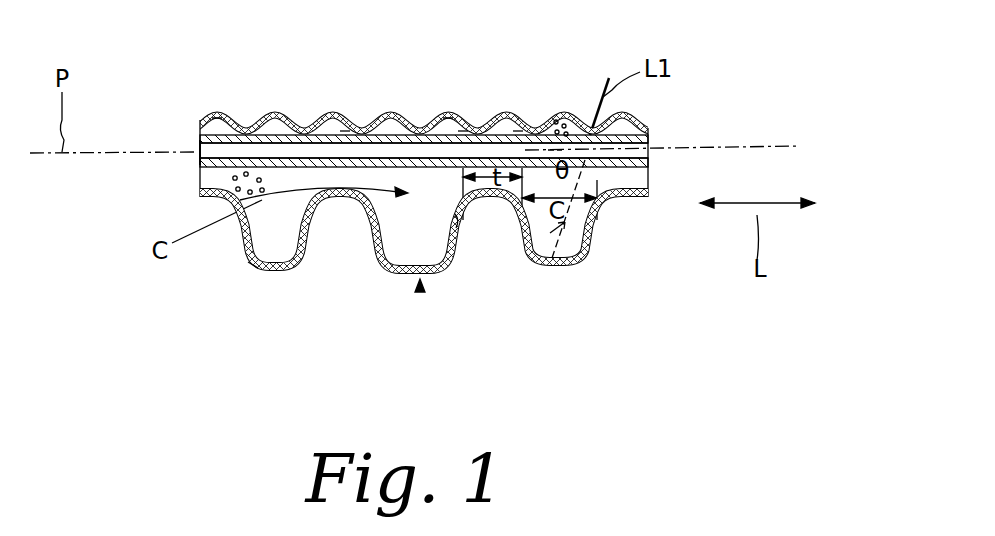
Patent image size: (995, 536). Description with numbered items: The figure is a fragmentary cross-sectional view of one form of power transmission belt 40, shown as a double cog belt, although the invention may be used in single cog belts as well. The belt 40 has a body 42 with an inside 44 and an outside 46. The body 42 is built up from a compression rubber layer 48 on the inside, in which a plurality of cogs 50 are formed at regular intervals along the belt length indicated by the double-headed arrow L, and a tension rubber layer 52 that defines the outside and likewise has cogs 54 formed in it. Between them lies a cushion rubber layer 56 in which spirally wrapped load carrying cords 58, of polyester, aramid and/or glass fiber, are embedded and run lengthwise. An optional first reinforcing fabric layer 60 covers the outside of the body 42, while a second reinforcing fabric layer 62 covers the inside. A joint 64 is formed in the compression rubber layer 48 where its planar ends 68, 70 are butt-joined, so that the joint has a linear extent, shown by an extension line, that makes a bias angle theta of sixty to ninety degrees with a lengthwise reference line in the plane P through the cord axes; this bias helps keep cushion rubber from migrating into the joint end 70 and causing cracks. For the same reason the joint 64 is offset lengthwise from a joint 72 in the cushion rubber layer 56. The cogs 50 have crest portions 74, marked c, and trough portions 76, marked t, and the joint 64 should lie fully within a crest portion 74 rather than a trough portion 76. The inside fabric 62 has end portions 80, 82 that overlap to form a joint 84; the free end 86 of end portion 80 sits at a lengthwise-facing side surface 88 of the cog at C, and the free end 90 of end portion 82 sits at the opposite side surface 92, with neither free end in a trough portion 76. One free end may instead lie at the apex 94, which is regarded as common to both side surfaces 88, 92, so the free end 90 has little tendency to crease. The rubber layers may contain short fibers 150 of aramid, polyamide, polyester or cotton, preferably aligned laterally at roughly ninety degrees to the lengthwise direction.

The power transmission belt 40 is at (649, 133).
The body 42 is at (649, 167).
The inside 44 is at (632, 192).
The outside 46 is at (288, 128).
The compression rubber layer 48 is at (257, 260).
The cogs 50 is at (302, 270).
The tension rubber layer 52 is at (345, 128).
The cogs 54 is at (275, 110).
The cushion rubber layer 56 is at (518, 128).
The load carrying cords 58 is at (200, 152).
The first reinforcing fabric layer 60 is at (393, 128).
The second reinforcing fabric layer 62 is at (520, 253).
The joint 64 is at (520, 273).
The end 68 is at (540, 217).
The end 70 is at (575, 240).
The joint 72 is at (367, 273).
The crest portion 74 is at (523, 263).
The trough portion 76 is at (483, 205).
The end portion 80 is at (383, 285).
The end portion 82 is at (447, 233).
The joint 84 is at (420, 290).
The free end 86 is at (348, 222).
The side surface 88 is at (360, 270).
The free end 90 is at (463, 128).
The side surface 92 is at (460, 263).
The apex 94 is at (405, 277).
The short fibers 150 is at (565, 128).